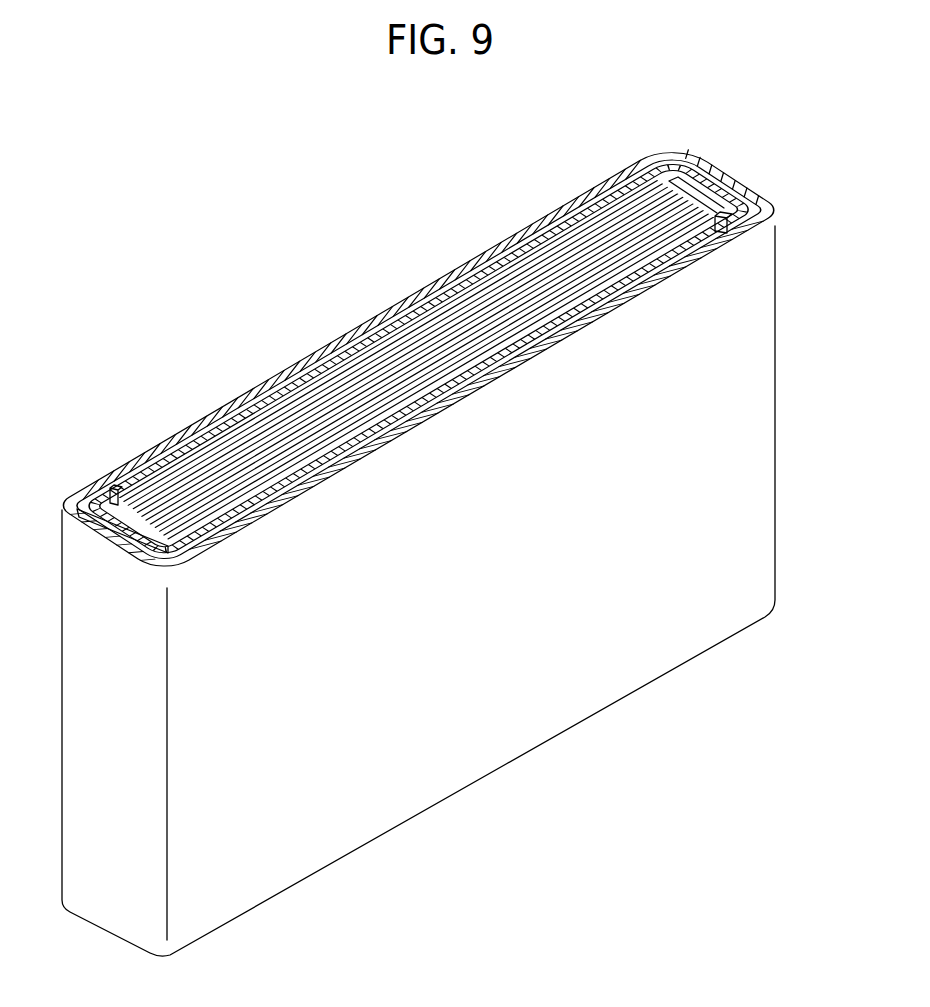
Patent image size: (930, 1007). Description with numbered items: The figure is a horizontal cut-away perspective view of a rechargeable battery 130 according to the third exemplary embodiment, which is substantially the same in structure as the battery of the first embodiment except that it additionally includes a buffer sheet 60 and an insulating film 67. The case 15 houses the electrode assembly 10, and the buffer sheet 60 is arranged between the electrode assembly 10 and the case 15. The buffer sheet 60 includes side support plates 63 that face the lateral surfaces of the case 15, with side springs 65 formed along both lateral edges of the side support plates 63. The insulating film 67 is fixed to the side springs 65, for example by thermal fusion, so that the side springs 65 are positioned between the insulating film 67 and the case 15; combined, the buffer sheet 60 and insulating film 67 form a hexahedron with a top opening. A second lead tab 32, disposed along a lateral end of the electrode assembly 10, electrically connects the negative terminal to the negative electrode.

The rechargeable battery 130 is at (272, 323).
The case 15 is at (503, 734).
The side springs 65 is at (760, 244).
The insulating film 67 is at (659, 272).
The electrode assembly 10 is at (652, 197).
The buffer sheet 60 is at (676, 178).
The side support plates 63 is at (693, 180).
The second lead tab 32 is at (722, 212).